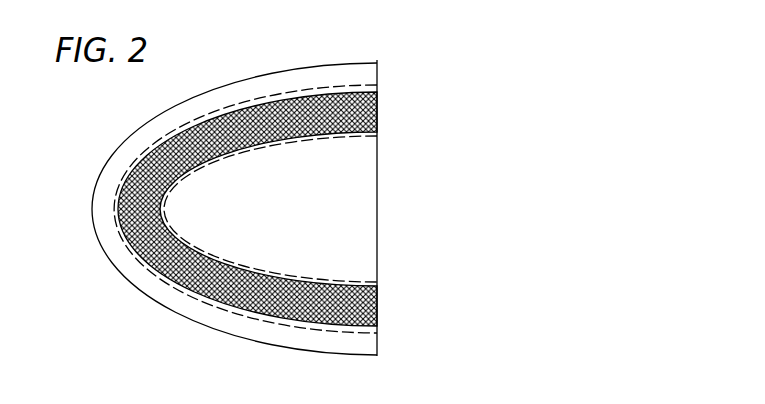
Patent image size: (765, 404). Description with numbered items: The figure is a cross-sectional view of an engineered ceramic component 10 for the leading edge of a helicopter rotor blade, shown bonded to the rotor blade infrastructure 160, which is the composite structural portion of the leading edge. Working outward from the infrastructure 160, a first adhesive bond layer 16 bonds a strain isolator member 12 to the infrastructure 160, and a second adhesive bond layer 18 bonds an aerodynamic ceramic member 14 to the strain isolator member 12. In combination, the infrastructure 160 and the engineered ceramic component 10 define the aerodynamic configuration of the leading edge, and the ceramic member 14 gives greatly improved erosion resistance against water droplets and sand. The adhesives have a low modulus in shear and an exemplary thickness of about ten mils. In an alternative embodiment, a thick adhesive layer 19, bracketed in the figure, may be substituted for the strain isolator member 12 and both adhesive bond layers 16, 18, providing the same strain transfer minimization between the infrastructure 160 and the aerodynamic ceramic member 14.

The engineered ceramic component 10 is at (292, 44).
The strain isolator member 12 is at (377, 108).
The aerodynamic ceramic member 14 is at (182, 118).
The first adhesive bond layer 16 is at (348, 291).
The second adhesive bond layer 18 is at (230, 307).
The thick adhesive layer 19 is at (385, 286).
The infrastructure 160 is at (350, 207).